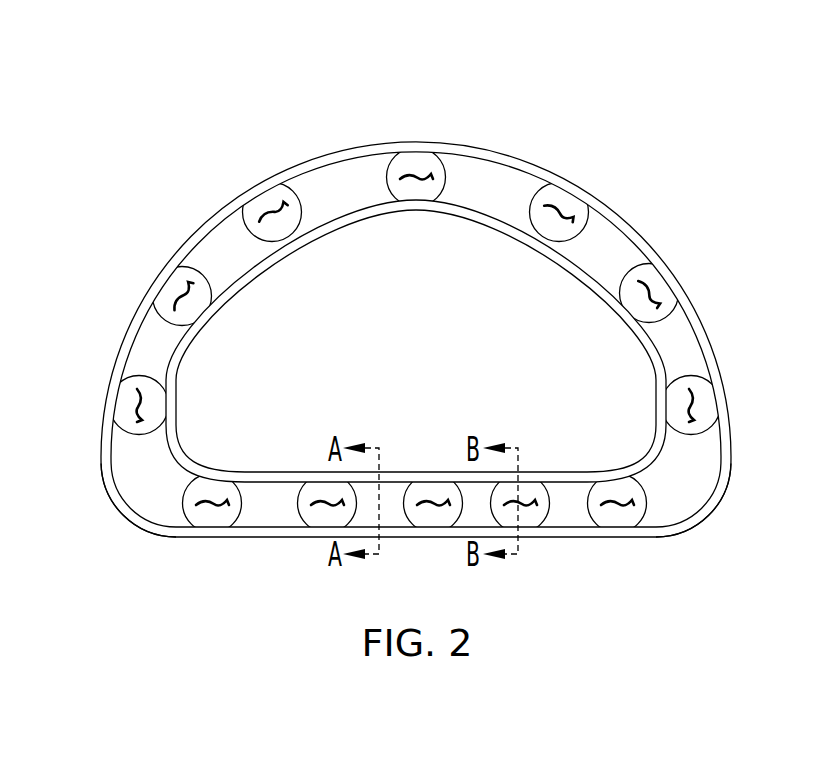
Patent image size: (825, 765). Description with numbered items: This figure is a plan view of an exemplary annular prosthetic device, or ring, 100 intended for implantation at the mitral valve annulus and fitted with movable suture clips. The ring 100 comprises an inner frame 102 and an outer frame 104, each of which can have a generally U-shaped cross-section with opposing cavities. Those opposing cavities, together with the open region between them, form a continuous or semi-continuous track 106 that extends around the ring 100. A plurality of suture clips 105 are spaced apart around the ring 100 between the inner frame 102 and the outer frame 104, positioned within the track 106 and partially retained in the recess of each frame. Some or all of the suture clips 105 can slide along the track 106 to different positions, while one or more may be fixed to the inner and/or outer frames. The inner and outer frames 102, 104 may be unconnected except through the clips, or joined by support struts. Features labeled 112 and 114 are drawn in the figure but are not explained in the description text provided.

The annular prosthetic device 100 is at (416, 307).
The inner frame 102 is at (452, 213).
The outer frame 104 is at (513, 162).
The suture clip 105 is at (167, 290).
The track 106 is at (424, 305).
The end portion 112 is at (104, 468).
The pocket 114 is at (414, 142).